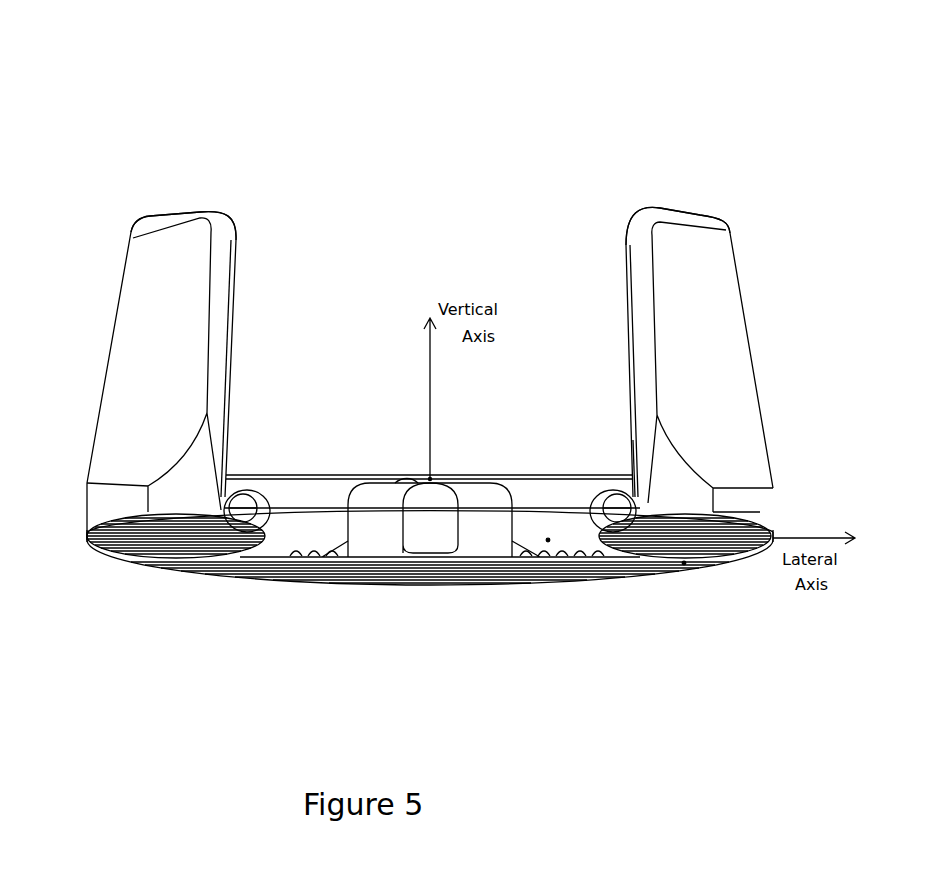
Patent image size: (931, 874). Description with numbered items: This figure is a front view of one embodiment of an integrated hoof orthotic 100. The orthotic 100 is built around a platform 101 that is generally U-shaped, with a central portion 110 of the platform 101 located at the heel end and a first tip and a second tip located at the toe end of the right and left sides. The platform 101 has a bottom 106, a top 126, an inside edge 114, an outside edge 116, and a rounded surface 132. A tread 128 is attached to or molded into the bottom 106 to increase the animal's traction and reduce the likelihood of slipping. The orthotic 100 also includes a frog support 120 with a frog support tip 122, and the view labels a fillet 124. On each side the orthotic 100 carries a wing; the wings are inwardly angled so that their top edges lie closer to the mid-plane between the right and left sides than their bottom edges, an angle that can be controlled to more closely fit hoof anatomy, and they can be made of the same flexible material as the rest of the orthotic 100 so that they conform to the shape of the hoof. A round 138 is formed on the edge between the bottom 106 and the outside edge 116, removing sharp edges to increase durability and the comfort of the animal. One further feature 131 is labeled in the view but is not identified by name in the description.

The integrated hoof orthotic 100 is at (472, 67).
The platform 101 is at (80, 532).
The bottom 106 is at (178, 563).
The central portion 110 is at (405, 478).
The inside edge 114 is at (547, 541).
The outside edge 116 is at (762, 507).
The frog support 120 is at (480, 523).
The frog support tip 122 is at (413, 522).
The fillet 124 is at (300, 515).
The top 126 is at (429, 478).
The tread 128 is at (684, 563).
The arm edge 131 is at (632, 433).
The rounded surface 132 is at (563, 490).
The round 138 is at (90, 545).